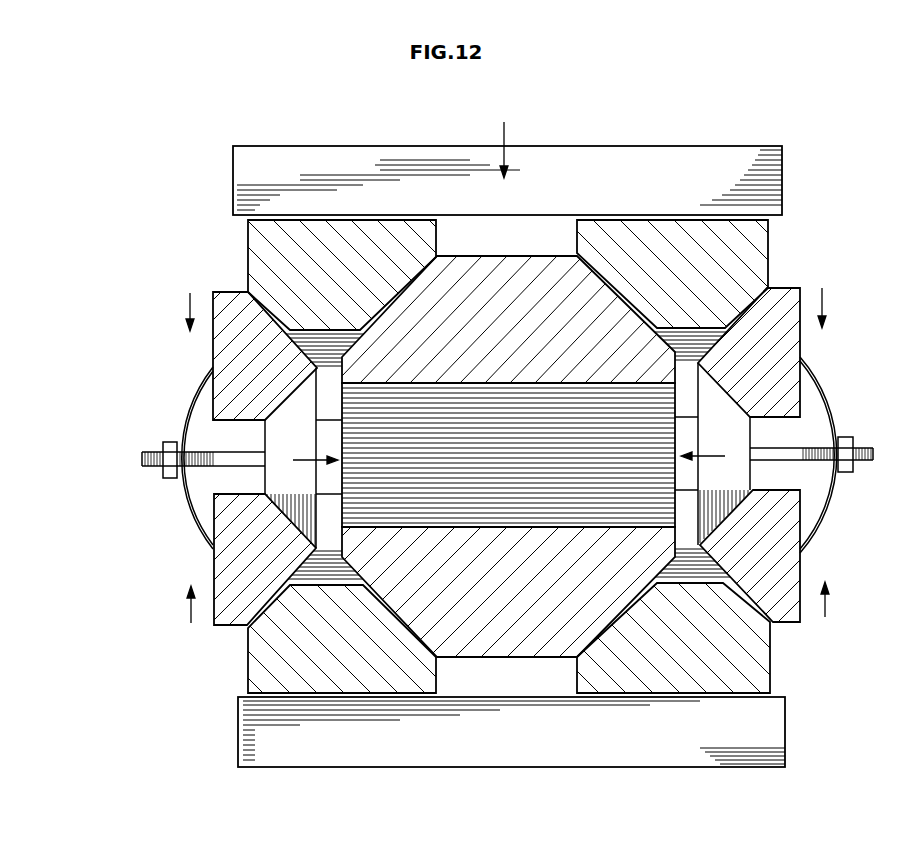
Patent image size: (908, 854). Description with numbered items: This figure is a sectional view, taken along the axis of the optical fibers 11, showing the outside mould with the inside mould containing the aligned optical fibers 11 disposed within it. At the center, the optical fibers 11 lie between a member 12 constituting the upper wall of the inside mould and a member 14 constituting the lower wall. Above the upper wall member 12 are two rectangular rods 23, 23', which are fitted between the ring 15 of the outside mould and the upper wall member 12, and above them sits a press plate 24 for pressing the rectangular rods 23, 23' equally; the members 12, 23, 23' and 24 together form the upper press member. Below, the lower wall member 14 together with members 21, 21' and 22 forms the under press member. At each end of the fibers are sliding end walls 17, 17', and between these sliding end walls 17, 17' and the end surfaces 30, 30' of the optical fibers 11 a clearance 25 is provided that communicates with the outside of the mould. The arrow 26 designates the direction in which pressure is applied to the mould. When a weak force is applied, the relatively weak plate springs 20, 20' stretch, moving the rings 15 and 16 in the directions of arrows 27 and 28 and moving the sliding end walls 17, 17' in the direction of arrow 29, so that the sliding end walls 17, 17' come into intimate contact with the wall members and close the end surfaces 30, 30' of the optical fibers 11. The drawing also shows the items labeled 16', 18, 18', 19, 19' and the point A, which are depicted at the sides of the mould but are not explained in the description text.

The optical fibers 11 is at (521, 505).
The member constituting the upper wall of the mould 12 is at (540, 270).
The member constituting the lower wall of the mould 14 is at (534, 649).
The ring 15 is at (793, 342).
The ring 16 is at (775, 556).
The left lower wedge block 16' is at (265, 559).
The sliding end wall 17 is at (724, 454).
The sliding end wall 17' is at (290, 458).
The right tie bolt shaft 18 is at (816, 480).
The left tie bolt shaft 18' is at (197, 485).
The right nut 19 is at (859, 437).
The left nut 19' is at (154, 443).
The plate spring 20 is at (835, 455).
The plate spring 20' is at (234, 420).
The under press member component 21 is at (696, 638).
The under press member component 21' is at (319, 639).
The under press member component 22 is at (523, 757).
The rectangular rod 23 is at (693, 274).
The rectangular rod 23' is at (309, 275).
The press plate 24 is at (574, 147).
The clearance 25 is at (327, 413).
The direction of applying pressure 26 is at (504, 130).
The direction of ring movement 27 is at (190, 302).
The direction of ring movement 28 is at (191, 616).
The direction of sliding wall movement 29 is at (310, 460).
The end surface of the optical fibers 30 is at (750, 504).
The end surface of the optical fibers 30' is at (279, 508).
The point A is at (360, 500).